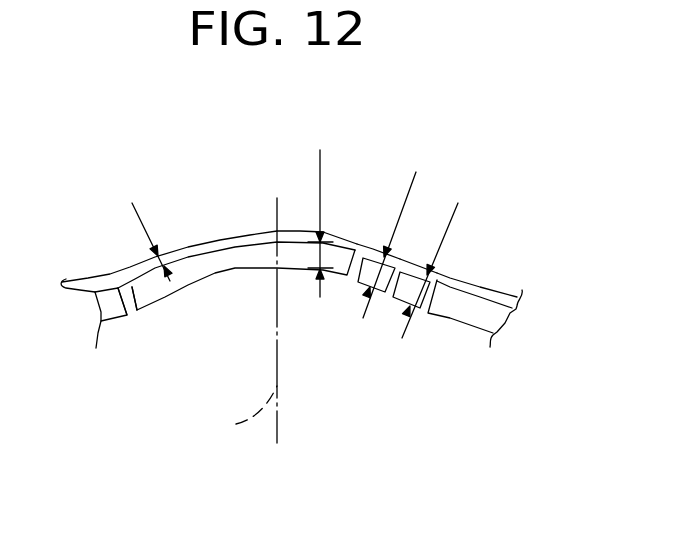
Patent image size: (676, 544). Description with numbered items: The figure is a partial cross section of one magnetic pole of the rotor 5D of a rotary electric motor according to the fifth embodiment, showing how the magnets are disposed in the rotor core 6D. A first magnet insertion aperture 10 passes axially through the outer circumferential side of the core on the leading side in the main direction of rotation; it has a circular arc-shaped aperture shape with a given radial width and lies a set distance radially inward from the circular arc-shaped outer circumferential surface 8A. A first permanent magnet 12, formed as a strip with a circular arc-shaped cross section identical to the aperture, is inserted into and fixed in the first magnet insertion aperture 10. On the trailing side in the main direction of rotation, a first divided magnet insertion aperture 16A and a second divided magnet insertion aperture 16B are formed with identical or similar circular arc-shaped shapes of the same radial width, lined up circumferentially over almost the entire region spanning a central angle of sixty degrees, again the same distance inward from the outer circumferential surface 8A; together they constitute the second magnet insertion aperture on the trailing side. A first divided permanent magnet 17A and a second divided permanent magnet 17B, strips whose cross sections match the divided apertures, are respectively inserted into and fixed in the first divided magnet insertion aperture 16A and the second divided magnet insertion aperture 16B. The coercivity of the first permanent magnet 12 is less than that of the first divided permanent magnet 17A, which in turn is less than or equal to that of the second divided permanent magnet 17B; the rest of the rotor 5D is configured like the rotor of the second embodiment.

The rotor 5D is at (133, 118).
The rotor core 6D is at (480, 284).
The outer peripheral surface 8A is at (261, 231).
The first magnet insertion aperture 10 is at (222, 249).
The first permanent magnet 12 is at (150, 282).
The first divided magnet insertion aperture 16A is at (366, 280).
The second divided magnet insertion aperture 16B is at (403, 296).
The first divided permanent magnet 17A is at (376, 257).
The second divided permanent magnet 17B is at (423, 273).